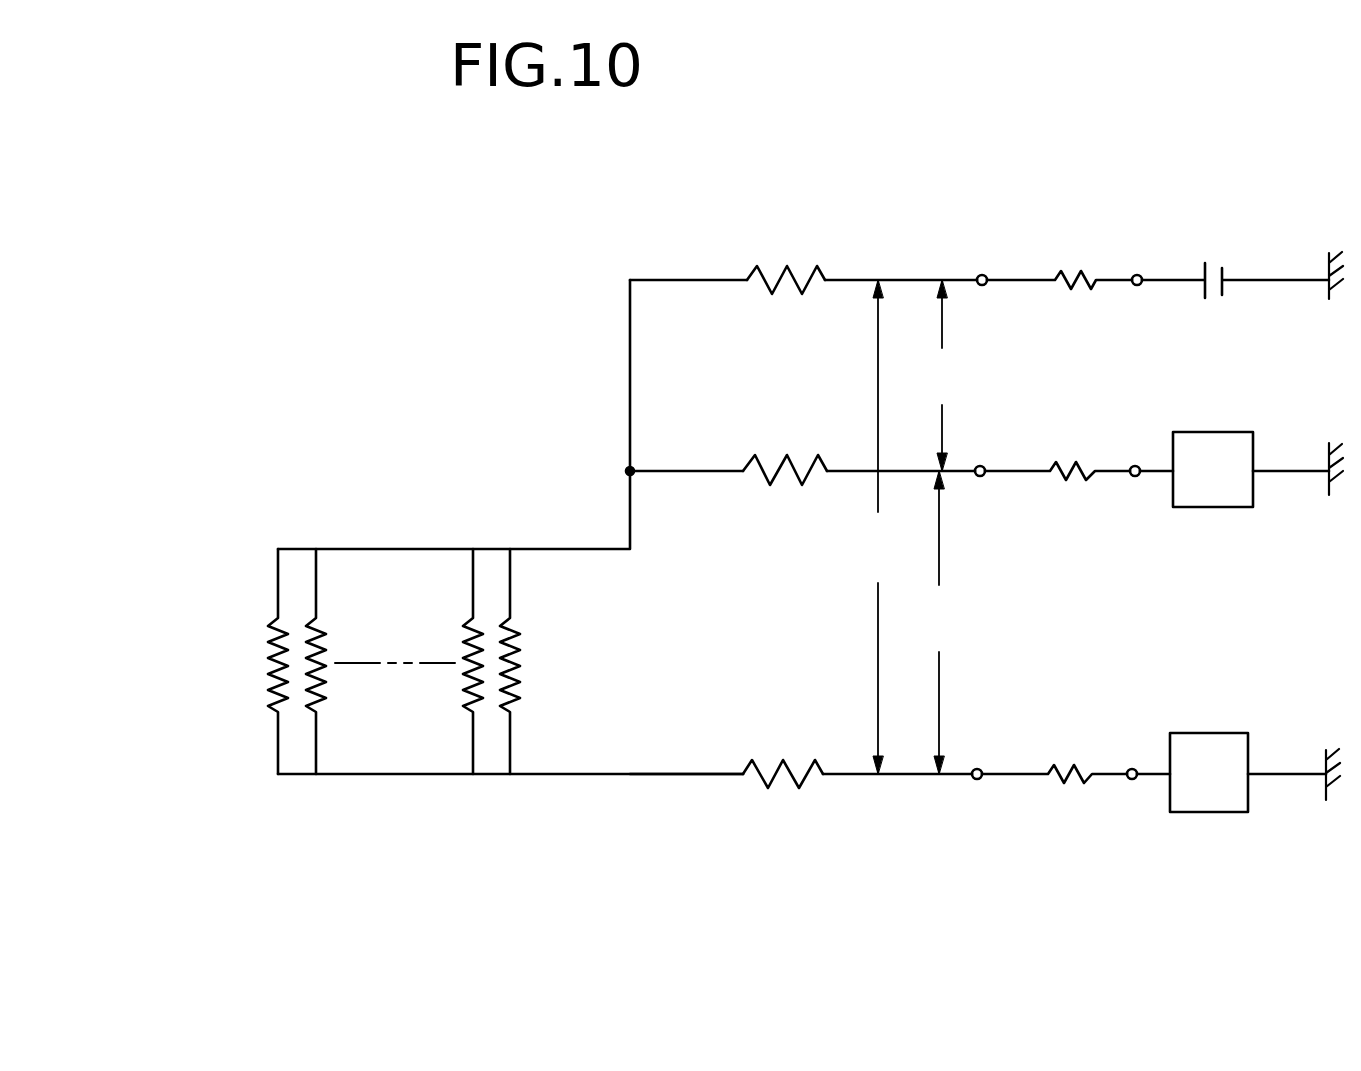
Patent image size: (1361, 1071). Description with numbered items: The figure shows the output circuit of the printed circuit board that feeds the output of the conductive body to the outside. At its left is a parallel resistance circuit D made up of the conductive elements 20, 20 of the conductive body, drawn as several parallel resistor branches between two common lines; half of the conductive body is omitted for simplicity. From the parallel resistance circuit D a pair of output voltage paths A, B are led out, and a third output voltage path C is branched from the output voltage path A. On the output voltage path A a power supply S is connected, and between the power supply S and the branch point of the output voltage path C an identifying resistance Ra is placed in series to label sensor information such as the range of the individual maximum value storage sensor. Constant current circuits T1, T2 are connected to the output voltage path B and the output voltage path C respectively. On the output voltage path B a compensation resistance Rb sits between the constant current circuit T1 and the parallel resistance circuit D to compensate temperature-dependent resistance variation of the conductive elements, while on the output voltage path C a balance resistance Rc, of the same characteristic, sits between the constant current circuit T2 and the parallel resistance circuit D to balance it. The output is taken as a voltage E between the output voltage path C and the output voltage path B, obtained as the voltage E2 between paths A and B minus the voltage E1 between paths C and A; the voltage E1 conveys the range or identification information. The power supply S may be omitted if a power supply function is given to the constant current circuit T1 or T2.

The conductive element 20 is at (278, 578).
The output voltage path A is at (694, 280).
The output voltage path B is at (687, 775).
The output voltage path C is at (692, 472).
The parallel resistance circuit D is at (412, 785).
The identifying resistance Ra is at (786, 256).
The compensation resistance Rb is at (783, 751).
The balance resistance Rc is at (785, 449).
The power supply S is at (1235, 258).
The constant current circuit T1 is at (1209, 772).
The constant current circuit T2 is at (1213, 469).
The voltage E is at (940, 622).
The voltage E1 is at (947, 375).
The voltage E2 is at (884, 527).